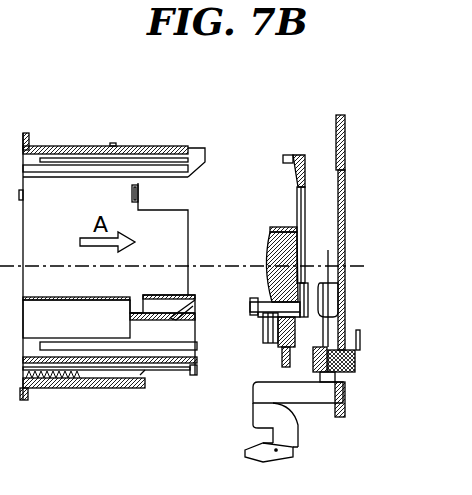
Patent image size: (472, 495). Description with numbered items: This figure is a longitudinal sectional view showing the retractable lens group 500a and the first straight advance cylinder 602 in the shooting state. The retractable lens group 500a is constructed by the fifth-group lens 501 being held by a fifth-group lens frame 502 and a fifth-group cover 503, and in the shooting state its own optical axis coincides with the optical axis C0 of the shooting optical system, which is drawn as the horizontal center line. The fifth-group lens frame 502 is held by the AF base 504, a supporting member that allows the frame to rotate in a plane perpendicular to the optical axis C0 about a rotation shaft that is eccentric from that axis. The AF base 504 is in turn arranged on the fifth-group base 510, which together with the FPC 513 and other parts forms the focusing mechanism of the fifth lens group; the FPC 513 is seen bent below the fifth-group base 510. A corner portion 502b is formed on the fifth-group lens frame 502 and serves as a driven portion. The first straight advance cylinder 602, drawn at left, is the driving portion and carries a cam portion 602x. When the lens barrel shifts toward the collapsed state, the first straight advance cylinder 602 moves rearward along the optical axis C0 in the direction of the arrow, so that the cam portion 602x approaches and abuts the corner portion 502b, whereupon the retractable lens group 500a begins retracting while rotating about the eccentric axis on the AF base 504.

The first straight advance cylinder 602 is at (65, 187).
The cam portion 602x is at (185, 318).
The retractable lens group 500a is at (320, 117).
The group-5 cover 503 is at (277, 230).
The group-5 lens 501 is at (282, 232).
The group-5 lens frame 502 is at (283, 250).
The corner portion 502b is at (257, 302).
The AF base 504 is at (302, 157).
The group-5 base 510 is at (345, 165).
The FPC 513 is at (323, 403).
The optical axis C0 is at (350, 266).